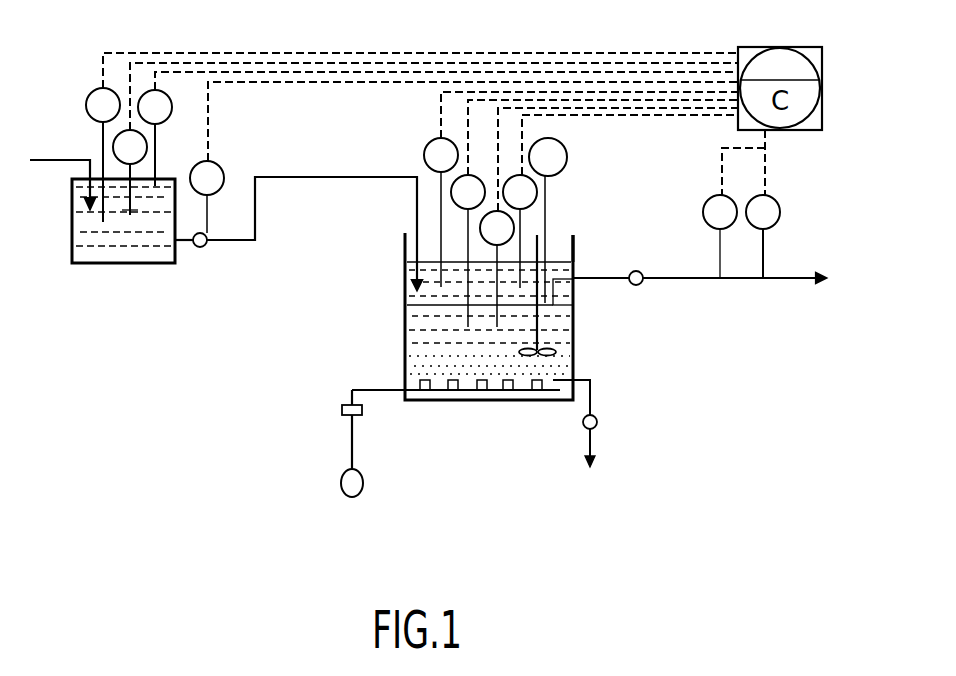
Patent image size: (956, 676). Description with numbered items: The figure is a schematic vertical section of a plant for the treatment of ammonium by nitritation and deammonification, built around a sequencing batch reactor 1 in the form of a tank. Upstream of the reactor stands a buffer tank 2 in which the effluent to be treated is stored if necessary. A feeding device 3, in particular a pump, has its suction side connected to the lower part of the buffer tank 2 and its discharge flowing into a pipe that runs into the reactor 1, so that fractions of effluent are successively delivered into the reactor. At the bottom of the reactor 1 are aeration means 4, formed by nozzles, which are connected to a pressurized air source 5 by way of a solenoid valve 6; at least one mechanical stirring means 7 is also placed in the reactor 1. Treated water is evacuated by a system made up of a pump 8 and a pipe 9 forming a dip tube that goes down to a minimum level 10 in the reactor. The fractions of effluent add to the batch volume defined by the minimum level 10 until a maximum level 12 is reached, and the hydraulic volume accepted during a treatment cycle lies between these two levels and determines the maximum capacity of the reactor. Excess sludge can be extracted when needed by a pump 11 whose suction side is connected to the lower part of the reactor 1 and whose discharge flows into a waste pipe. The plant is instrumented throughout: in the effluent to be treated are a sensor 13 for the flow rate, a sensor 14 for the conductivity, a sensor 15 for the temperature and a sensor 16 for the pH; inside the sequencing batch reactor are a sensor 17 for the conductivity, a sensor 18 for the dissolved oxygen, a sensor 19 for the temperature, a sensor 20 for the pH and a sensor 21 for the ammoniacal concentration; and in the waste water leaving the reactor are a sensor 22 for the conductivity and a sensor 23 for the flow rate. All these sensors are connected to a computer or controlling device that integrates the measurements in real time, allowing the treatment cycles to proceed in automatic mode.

The sequencing batch reactor 1 is at (418, 338).
The buffer tank 2 is at (120, 248).
The feeding device 3 is at (200, 247).
The aeration means 4 is at (453, 392).
The pressurized air source 5 is at (363, 483).
The solenoid valve 6 is at (342, 408).
The mechanical stirring means 7 is at (557, 351).
The pump 8 is at (634, 270).
The pipe 9 is at (575, 285).
The minimum level 10 is at (574, 332).
The pump 11 is at (596, 425).
The maximum level 12 is at (556, 238).
The flow rate sensor 13 is at (209, 163).
The conductivity sensor 14 is at (90, 97).
The temperature sensor 15 is at (147, 147).
The pH sensor 16 is at (172, 110).
The conductivity sensor 17 is at (470, 176).
The dissolved oxygen sensor 18 is at (428, 141).
The temperature sensor 19 is at (481, 228).
The pH sensor 20 is at (537, 192).
The ammoniacal concentration sensor 21 is at (540, 138).
The conductivity sensor 22 is at (780, 212).
The flow rate sensor 23 is at (703, 212).